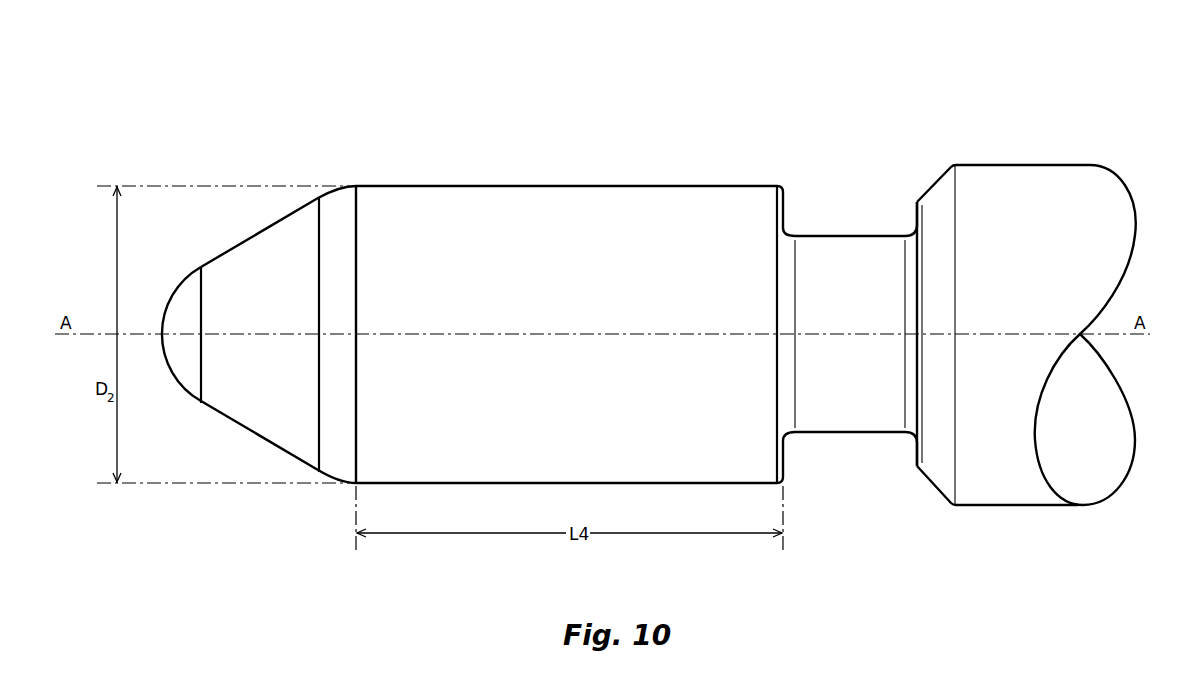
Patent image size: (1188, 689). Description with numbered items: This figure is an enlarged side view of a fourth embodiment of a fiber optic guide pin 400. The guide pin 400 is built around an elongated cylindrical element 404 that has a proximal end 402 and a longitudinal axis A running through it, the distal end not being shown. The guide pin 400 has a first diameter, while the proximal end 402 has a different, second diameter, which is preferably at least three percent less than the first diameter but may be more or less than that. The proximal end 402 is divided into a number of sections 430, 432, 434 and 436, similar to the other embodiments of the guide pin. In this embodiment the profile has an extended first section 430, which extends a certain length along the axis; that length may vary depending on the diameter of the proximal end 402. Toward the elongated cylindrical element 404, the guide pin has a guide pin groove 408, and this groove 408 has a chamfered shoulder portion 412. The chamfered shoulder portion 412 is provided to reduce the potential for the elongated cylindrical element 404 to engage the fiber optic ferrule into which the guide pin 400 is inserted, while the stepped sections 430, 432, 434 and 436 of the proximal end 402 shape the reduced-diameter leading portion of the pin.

The guide pin 400 is at (860, 147).
The proximal end 402 is at (512, 115).
The elongated cylindrical element 404 is at (1040, 163).
The guide pin groove 408 is at (848, 434).
The chamfered shoulder portion 412 is at (929, 485).
The first section 430 is at (717, 185).
The second section 432 is at (347, 208).
The third section 434 is at (244, 255).
The fourth section 436 is at (180, 293).